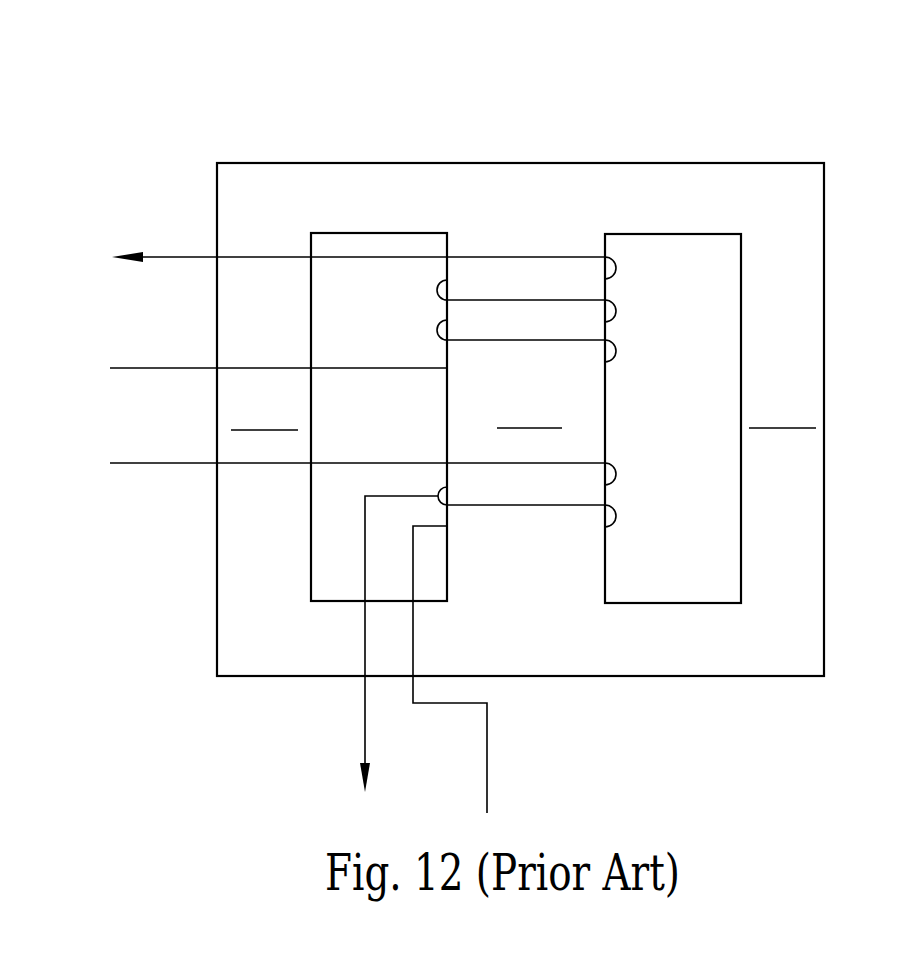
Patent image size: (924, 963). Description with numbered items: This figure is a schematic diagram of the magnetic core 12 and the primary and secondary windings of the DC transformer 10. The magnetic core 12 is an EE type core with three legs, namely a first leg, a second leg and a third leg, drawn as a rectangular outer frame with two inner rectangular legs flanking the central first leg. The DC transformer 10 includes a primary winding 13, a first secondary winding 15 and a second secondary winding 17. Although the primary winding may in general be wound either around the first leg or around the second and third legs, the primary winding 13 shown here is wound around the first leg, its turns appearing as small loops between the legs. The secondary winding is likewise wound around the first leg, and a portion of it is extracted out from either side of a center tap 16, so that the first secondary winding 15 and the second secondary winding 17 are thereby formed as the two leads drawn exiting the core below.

The DC transformer 10 is at (776, 132).
The magnetic core 12 is at (310, 163).
The primary winding 13 is at (137, 368).
The first secondary winding 15 is at (137, 462).
The center tap 16 is at (447, 496).
The second secondary winding 17 is at (487, 756).